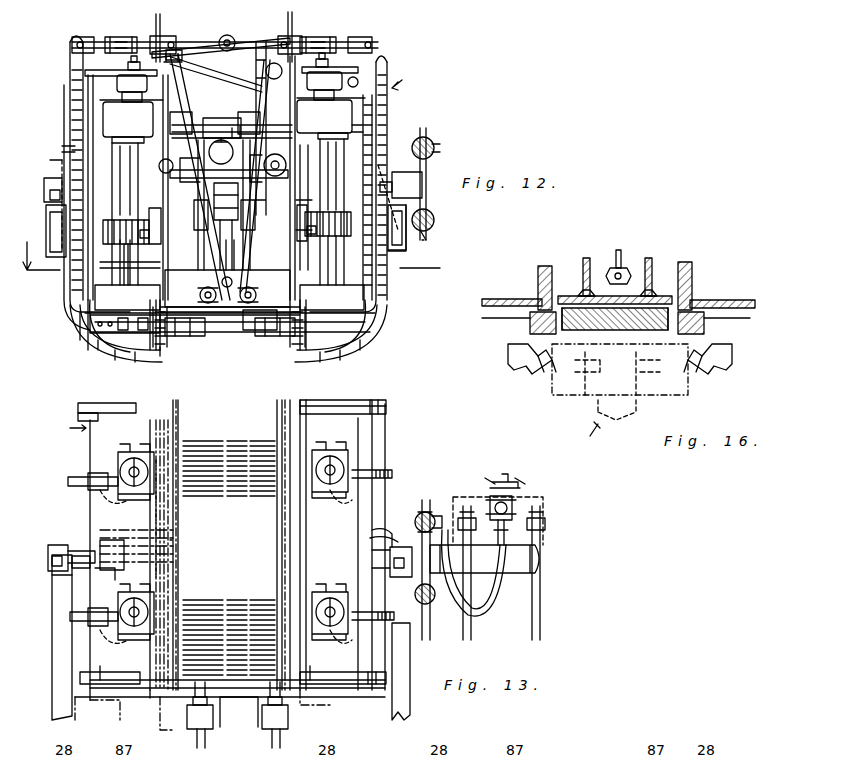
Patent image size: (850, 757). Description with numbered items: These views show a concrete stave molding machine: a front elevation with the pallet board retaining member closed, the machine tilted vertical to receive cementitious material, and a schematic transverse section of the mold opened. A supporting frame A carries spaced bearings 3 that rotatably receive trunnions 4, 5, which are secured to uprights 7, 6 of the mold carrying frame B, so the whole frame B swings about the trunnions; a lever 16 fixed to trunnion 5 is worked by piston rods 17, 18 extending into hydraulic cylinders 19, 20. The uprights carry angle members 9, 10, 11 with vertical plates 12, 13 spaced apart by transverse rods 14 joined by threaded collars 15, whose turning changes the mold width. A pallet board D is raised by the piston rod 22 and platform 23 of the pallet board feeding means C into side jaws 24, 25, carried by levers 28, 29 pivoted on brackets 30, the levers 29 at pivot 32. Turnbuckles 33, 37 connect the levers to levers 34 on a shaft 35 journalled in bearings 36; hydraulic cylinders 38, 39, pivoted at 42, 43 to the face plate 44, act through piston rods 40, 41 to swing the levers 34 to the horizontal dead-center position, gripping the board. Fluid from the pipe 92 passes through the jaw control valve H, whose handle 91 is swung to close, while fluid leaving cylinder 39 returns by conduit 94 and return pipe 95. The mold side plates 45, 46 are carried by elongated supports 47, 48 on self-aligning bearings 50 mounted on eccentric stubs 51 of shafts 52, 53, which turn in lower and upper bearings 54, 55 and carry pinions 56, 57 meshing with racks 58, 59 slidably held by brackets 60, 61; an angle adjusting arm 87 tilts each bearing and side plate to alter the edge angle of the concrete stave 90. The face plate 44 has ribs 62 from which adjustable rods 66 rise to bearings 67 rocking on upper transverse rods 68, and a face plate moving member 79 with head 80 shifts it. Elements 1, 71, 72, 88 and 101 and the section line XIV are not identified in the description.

In FIG. 13, the support leg 1 is at (390, 706).
In FIG. 12, the bearings 3 is at (44, 184).
In FIG. 13, the bearings 3 is at (48, 550).
In FIG. 12, the trunnion 4 is at (50, 200).
In FIG. 13, the trunnion 4 is at (76, 556).
In FIG. 12, the trunnion 5 is at (390, 160).
In FIG. 13, the trunnion 5 is at (380, 530).
In FIG. 12, the upright 6 is at (366, 112).
In FIG. 13, the upright 6 is at (364, 548).
In FIG. 12, the upright 7 is at (92, 282).
In FIG. 13, the upright 7 is at (100, 584).
In FIG. 12, the lower angle member 9 is at (290, 274).
In FIG. 16, the lower angle member 9 is at (730, 300).
In FIG. 13, the lower angle member 9 is at (372, 456).
In FIG. 12, the upper angle member 10 is at (96, 100).
In FIG. 12, the lower angle member 11 is at (84, 340).
In FIG. 16, the lower angle member 11 is at (500, 299).
In FIG. 13, the lower angle member 11 is at (90, 512).
In FIG. 12, the vertical plates 12 is at (290, 34).
In FIG. 16, the vertical plates 12 is at (676, 262).
In FIG. 12, the vertical plates 13 is at (166, 34).
In FIG. 16, the vertical plates 13 is at (552, 266).
In FIG. 12, the transverse rods 14 is at (185, 112).
In FIG. 12, the threaded collars 15 is at (214, 120).
In FIG. 12, the lever 16 is at (432, 206).
In FIG. 13, the lever 16 is at (416, 514).
In FIG. 12, the piston rod 17 is at (455, 184).
In FIG. 13, the piston rod 17 is at (432, 630).
In FIG. 12, the piston rod 18 is at (428, 138).
In FIG. 13, the piston rod 18 is at (442, 516).
In FIG. 12, the hydraulic cylinder 19 is at (434, 226).
In FIG. 13, the hydraulic cylinder 19 is at (426, 606).
In FIG. 12, the hydraulic cylinder 20 is at (434, 146).
In FIG. 13, the hydraulic cylinder 20 is at (434, 510).
In FIG. 16, the piston rod 22 is at (640, 412).
In FIG. 16, the platform 23 is at (590, 386).
In FIG. 12, the side jaw 24 is at (180, 338).
In FIG. 16, the side jaw 24 is at (546, 376).
In FIG. 13, the side jaw 24 is at (238, 598).
In FIG. 12, the side jaw 25 is at (280, 338).
In FIG. 16, the side jaw 25 is at (692, 376).
In FIG. 13, the side jaw 25 is at (318, 612).
In FIG. 12, the levers 28 is at (135, 352).
In FIG. 16, the levers 28 is at (518, 368).
In FIG. 13, the levers 28 is at (78, 408).
In FIG. 12, the levers 29 is at (342, 352).
In FIG. 16, the levers 29 is at (722, 368).
In FIG. 13, the levers 29 is at (290, 414).
In FIG. 12, the brackets 30 is at (229, 297).
In FIG. 12, the pivot 32 is at (88, 325).
In FIG. 12, the turnbuckles 33 is at (116, 38).
In FIG. 12, the levers 34 is at (240, 40).
In FIG. 12, the longitudinally-extending shaft 35 is at (236, 54).
In FIG. 12, the bearings 36 is at (215, 40).
In FIG. 12, the turnbuckles 37 is at (325, 38).
In FIG. 12, the hydraulic cylinder 38 is at (204, 307).
In FIG. 12, the hydraulic cylinder 39 is at (257, 308).
In FIG. 12, the piston rod 40 is at (223, 203).
In FIG. 12, the piston rod 41 is at (237, 204).
In FIG. 12, the pivot 42 is at (226, 307).
In FIG. 12, the pivot 43 is at (240, 330).
In FIG. 12, the face plate 44 is at (245, 340).
In FIG. 16, the face plate 44 is at (568, 296).
In FIG. 12, the side plate 45 is at (200, 335).
In FIG. 16, the side plate 45 is at (538, 334).
In FIG. 13, the side plate 45 is at (184, 534).
In FIG. 12, the side plate 46 is at (262, 338).
In FIG. 16, the side plate 46 is at (694, 334).
In FIG. 13, the side plate 46 is at (282, 542).
In FIG. 12, the elongated support 47 is at (160, 350).
In FIG. 16, the elongated support 47 is at (496, 317).
In FIG. 13, the elongated support 47 is at (166, 520).
In FIG. 12, the elongated support 48 is at (305, 350).
In FIG. 16, the elongated support 48 is at (737, 317).
In FIG. 13, the elongated support 48 is at (288, 592).
In FIG. 12, the self-aligning bearings 50 is at (118, 352).
In FIG. 13, the self-aligning bearings 50 is at (118, 462).
In FIG. 12, the eccentric stub 51 is at (155, 371).
In FIG. 13, the eccentric stub 51 is at (136, 470).
In FIG. 12, the shaft 52 is at (118, 150).
In FIG. 12, the shaft 53 is at (356, 132).
In FIG. 12, the lower bearing 54 is at (90, 320).
In FIG. 12, the upper bearing 55 is at (110, 110).
In FIG. 12, the pinion 56 is at (105, 226).
In FIG. 12, the pinion 57 is at (408, 240).
In FIG. 12, the rack 58 is at (149, 232).
In FIG. 12, the rack 59 is at (350, 222).
In FIG. 12, the brackets 60 is at (305, 236).
In FIG. 12, the brackets 61 is at (95, 262).
In FIG. 16, the elongated ribs 62 is at (650, 258).
In FIG. 12, the rods 66 is at (290, 215).
In FIG. 12, the supporting bearings 67 is at (268, 168).
In FIG. 12, the upper transverse rods 68 is at (223, 166).
In FIG. 13, the fitting 71 is at (262, 742).
In FIG. 13, the fitting 72 is at (236, 704).
In FIG. 16, the face plate moving member 79 is at (622, 262).
In FIG. 16, the head 80 is at (612, 282).
In FIG. 12, the angle adjusting arm 87 is at (62, 146).
In FIG. 13, the angle adjusting arm 87 is at (80, 484).
In FIG. 12, the bolt 88 is at (128, 62).
In FIG. 16, the concrete stave 90 is at (636, 332).
In FIG. 13, the handle 91 is at (510, 480).
In FIG. 13, the pipe 92 is at (472, 632).
In FIG. 13, the conduit 94 is at (496, 598).
In FIG. 13, the return pipe 95 is at (542, 606).
In FIG. 12, the pin 101 is at (241, 118).
In FIG. 12, the supporting frame A is at (226, 231).
In FIG. 13, the supporting frame A is at (52, 604).
In FIG. 12, the mold carrying frame B is at (413, 75).
In FIG. 13, the mold carrying frame B is at (68, 429).
In FIG. 16, the pallet board feeding means C is at (585, 432).
In FIG. 12, the pallet board D is at (255, 375).
In FIG. 13, the pallet board D is at (195, 545).
In FIG. 13, the jaw control valve H is at (516, 504).
In FIG. 12, the section line XIV is at (236, 248).